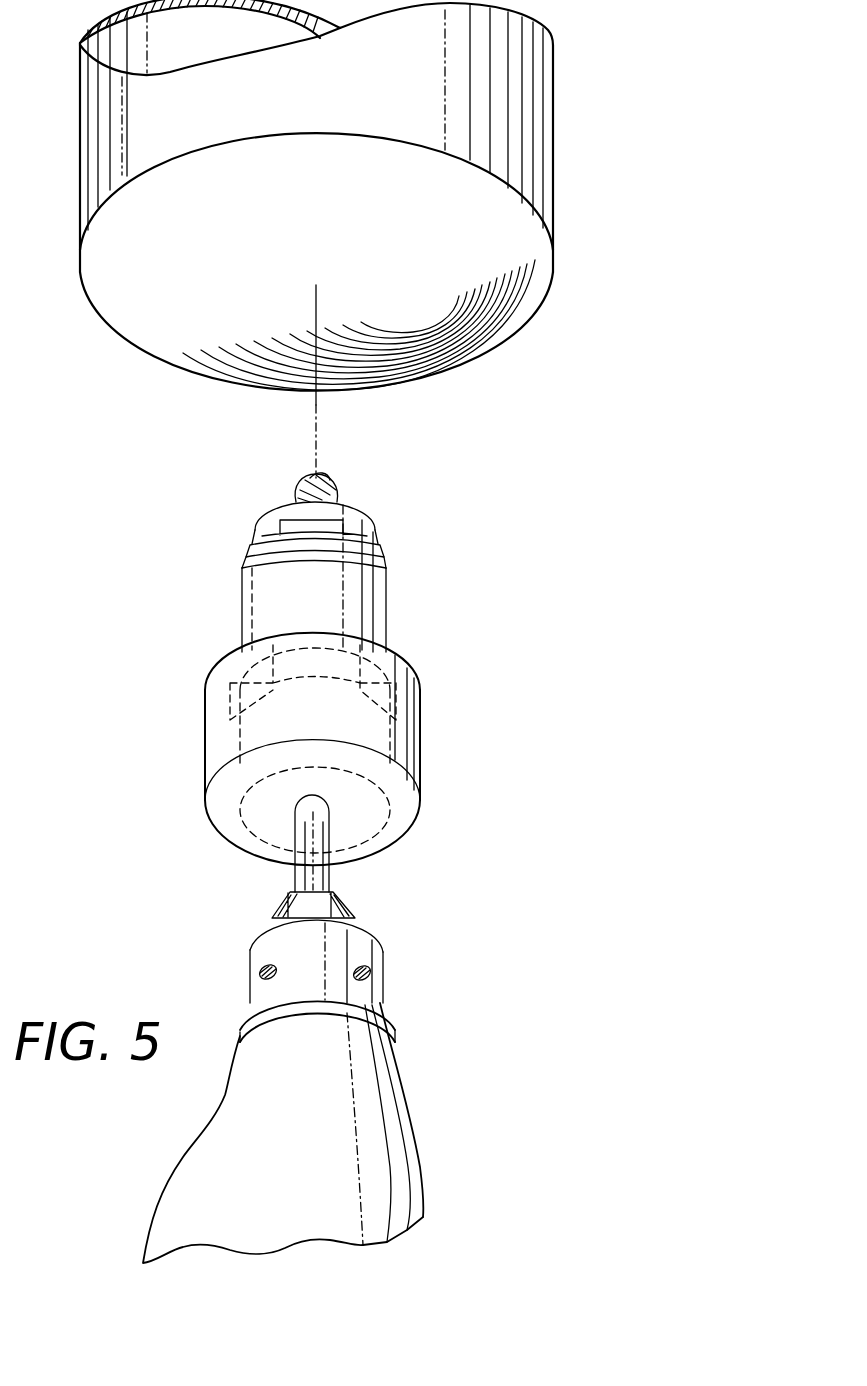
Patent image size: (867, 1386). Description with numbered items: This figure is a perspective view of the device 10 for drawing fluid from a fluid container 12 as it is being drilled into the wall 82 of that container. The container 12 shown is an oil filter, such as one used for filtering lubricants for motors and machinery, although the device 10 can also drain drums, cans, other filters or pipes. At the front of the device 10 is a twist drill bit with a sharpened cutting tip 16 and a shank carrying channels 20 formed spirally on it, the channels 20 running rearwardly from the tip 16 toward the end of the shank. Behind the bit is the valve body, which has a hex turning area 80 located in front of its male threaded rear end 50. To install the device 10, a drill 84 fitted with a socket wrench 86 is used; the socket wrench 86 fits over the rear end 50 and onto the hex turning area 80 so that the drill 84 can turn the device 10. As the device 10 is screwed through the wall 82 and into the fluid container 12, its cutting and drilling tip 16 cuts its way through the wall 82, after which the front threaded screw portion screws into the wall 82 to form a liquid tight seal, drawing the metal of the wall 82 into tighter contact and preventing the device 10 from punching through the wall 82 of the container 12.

The fluid container 12 is at (530, 153).
The wall of the fluid container 82 is at (537, 290).
The cutting tip 16 is at (314, 479).
The channels 20 is at (324, 481).
The device 10 is at (380, 603).
The hex turning area 80 is at (380, 688).
The rear end of the valve body 50 is at (380, 742).
The socket wrench 86 is at (417, 770).
The drill 84 is at (367, 1083).